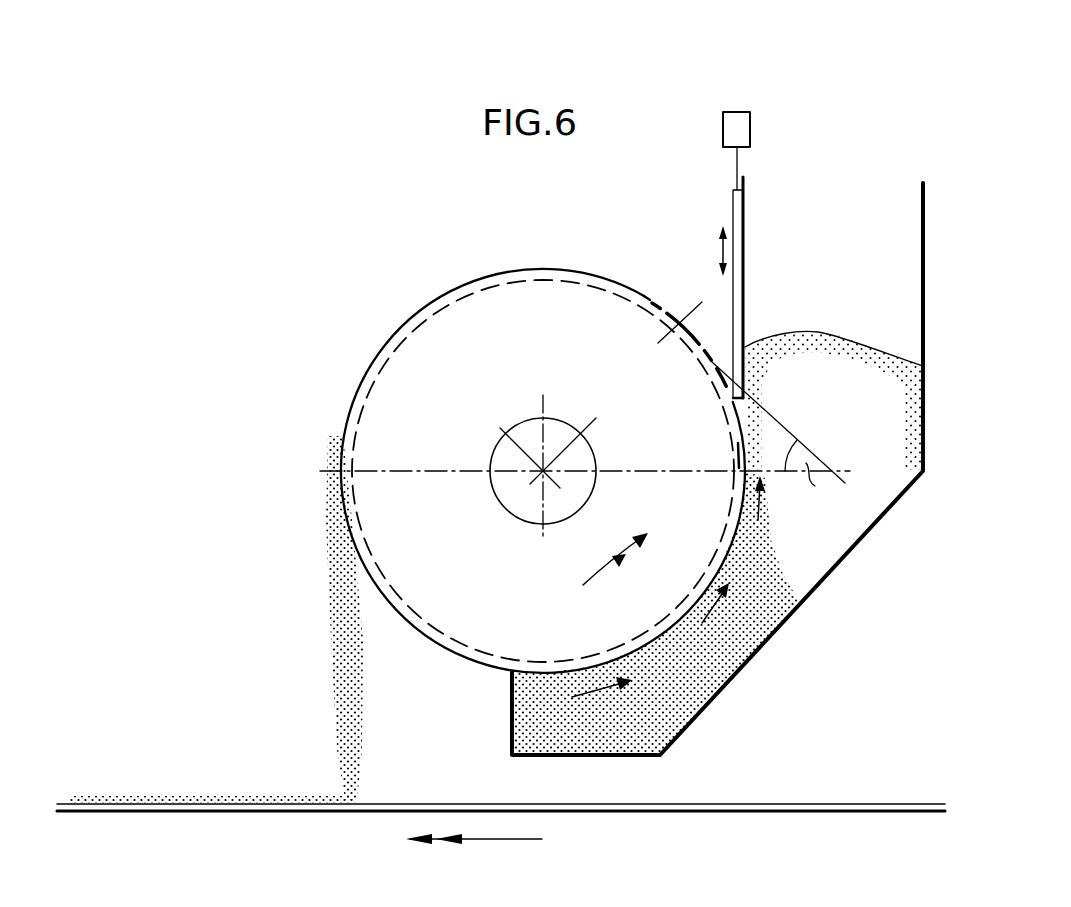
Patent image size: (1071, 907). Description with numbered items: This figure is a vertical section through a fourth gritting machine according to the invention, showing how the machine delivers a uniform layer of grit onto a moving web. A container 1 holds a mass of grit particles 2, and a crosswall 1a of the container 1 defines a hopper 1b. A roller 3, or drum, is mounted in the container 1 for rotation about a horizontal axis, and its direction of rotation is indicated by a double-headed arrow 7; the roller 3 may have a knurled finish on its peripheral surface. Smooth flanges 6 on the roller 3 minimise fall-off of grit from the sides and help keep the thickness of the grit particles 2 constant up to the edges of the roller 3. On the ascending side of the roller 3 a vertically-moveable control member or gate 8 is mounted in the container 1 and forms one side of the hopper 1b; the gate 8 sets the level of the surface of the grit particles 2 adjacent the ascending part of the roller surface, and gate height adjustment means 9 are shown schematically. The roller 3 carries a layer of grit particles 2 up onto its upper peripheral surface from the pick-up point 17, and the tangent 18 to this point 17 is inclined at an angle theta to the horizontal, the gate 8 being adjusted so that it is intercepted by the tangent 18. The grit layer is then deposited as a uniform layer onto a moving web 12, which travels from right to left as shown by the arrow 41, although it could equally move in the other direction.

The container 1 is at (860, 545).
The crosswall 1a is at (743, 225).
The hopper 1b is at (877, 268).
The grit particles 2 is at (890, 357).
The roller 3 is at (703, 543).
The smooth flanges 6 is at (480, 278).
The double-headed arrow 7 is at (603, 577).
The gate 8 is at (743, 268).
The gate height adjustment means 9 is at (747, 113).
The moving web 12 is at (143, 800).
The pick-up point 17 is at (678, 325).
The tangent 18 is at (784, 423).
The arrow 41 is at (502, 842).